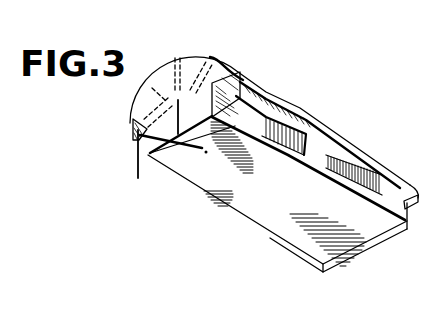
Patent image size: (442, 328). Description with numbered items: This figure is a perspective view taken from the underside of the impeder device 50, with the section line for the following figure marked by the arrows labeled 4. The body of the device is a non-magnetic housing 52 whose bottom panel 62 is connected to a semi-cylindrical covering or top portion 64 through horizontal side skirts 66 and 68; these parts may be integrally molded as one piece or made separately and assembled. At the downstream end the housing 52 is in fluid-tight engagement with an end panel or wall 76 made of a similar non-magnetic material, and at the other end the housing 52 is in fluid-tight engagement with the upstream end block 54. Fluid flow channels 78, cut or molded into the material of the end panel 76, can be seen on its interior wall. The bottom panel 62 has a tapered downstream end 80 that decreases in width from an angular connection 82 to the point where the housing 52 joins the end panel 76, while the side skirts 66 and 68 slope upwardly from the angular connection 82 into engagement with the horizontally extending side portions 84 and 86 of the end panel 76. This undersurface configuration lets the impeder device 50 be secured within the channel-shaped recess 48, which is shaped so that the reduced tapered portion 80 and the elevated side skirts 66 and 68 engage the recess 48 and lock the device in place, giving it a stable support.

The section line 4- 4 is at (178, 52).
The channel-shaped recess 48 is at (305, 5).
The impeder device 50 is at (192, 204).
The non-magnetic housing 52 is at (263, 163).
The upstream end block 54 is at (322, 262).
The bottom panel 62 is at (268, 219).
The semi-cylindrical covering or top portion 64 is at (324, 114).
The horizontal side skirt 66 is at (142, 152).
The horizontal side skirt 68 is at (305, 150).
The downstream end panel or wall 76 is at (144, 172).
The fluid flow channels 78 is at (142, 98).
The tapered downstream end 80 is at (190, 170).
The angular connection 82 is at (316, 147).
The horizontally extending side portion 84 is at (256, 101).
The horizontally extending side portion 86 is at (135, 140).